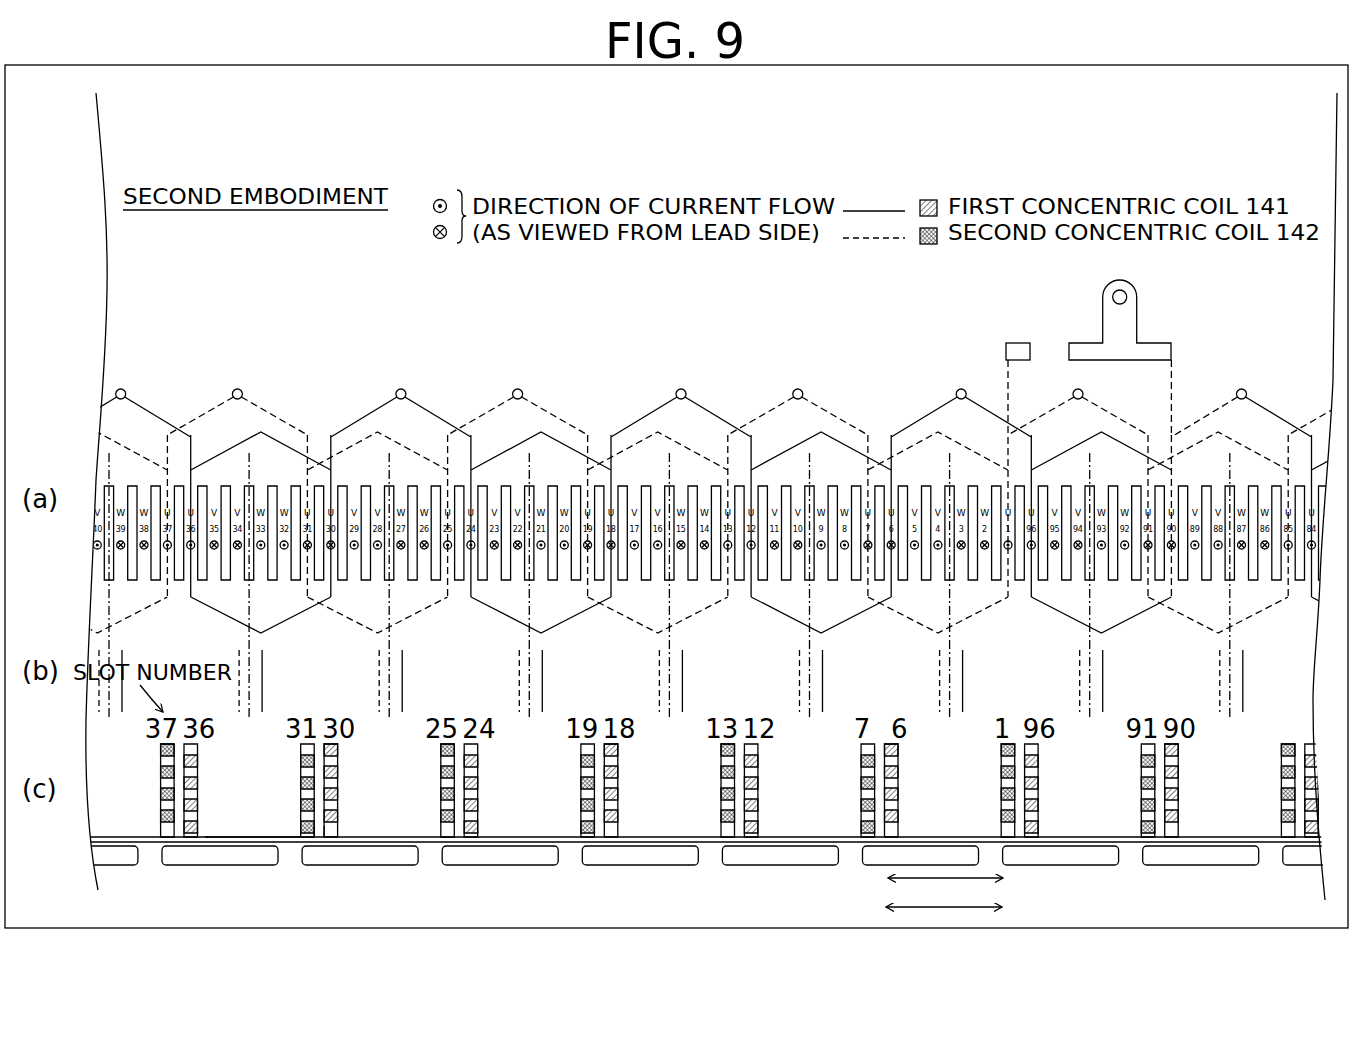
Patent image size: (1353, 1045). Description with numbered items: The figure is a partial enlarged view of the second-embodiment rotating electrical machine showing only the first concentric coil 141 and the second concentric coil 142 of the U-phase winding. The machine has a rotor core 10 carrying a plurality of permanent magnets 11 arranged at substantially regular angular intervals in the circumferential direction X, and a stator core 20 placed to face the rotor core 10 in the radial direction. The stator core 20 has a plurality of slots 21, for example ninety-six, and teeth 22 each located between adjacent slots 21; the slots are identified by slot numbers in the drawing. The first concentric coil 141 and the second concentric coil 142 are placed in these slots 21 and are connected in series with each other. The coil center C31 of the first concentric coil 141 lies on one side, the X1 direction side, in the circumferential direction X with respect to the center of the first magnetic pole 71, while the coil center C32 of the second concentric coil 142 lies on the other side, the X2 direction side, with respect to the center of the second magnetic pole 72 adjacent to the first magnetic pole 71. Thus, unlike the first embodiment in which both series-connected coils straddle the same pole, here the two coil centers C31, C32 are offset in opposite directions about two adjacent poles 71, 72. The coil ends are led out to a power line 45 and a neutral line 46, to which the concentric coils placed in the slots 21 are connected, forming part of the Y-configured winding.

The rotor core 10 is at (428, 866).
The permanent magnets 11 is at (513, 855).
The stator core 20 is at (229, 826).
The slots 21 is at (304, 814).
The teeth 22 is at (321, 836).
The power line 45 is at (1127, 327).
The neutral line 46 is at (1005, 350).
The first magnetic pole 71 is at (532, 468).
The second magnetic pole 72 is at (670, 468).
The first concentric coil 141 is at (1262, 403).
The second concentric coil 142 is at (1215, 410).
The coil center of the first concentric coil C31 is at (546, 697).
The coil center of the second concentric coil C32 is at (659, 675).
The circumferential direction X is at (944, 918).
The X1 direction side X1 is at (974, 891).
The X2 direction side X2 is at (917, 891).